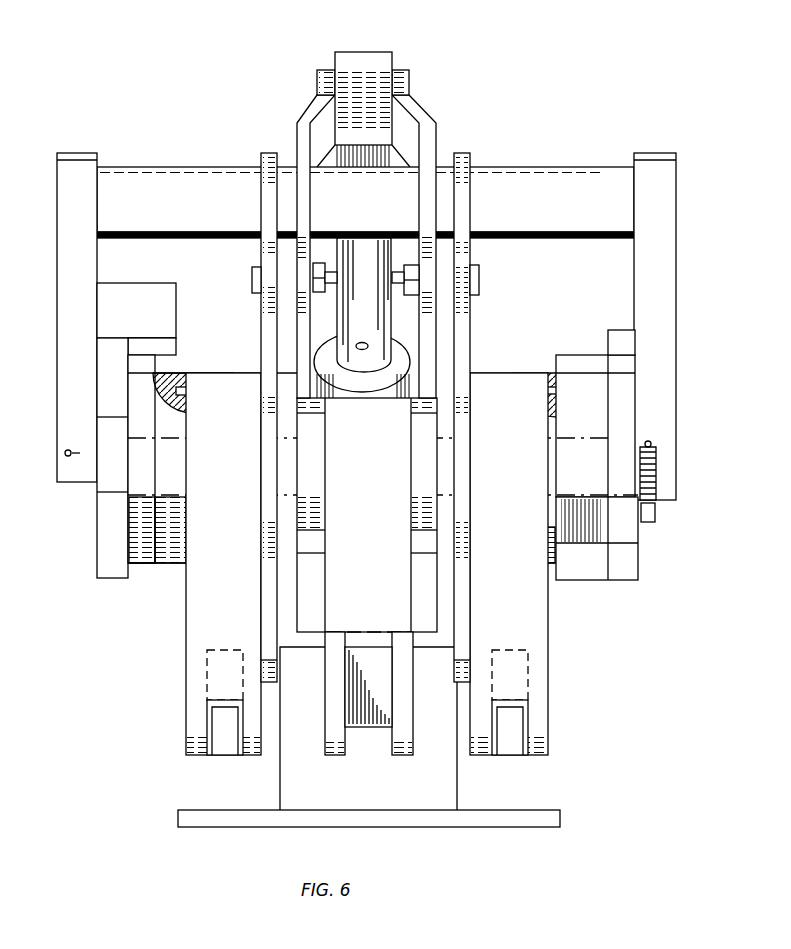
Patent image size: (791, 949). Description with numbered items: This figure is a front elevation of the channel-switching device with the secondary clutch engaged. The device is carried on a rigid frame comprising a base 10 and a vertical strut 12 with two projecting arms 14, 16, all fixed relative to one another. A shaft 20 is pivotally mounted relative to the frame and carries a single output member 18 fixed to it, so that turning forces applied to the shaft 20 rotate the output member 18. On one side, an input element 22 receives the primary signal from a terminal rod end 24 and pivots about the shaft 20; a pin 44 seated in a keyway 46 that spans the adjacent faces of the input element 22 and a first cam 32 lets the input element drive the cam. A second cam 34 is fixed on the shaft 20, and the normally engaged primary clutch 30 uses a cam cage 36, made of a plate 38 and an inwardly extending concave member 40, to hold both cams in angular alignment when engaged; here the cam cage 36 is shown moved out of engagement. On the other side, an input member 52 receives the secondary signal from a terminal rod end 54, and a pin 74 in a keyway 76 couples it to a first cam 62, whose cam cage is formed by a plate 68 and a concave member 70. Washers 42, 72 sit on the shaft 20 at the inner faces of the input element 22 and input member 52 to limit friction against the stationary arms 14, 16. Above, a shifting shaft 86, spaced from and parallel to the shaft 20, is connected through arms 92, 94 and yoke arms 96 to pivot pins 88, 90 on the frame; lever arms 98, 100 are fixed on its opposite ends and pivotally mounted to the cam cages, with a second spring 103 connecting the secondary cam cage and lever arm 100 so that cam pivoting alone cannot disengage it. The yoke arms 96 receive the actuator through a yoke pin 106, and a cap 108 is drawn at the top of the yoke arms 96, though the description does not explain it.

The base 10 is at (528, 828).
The vertical strut 12 is at (457, 786).
The projecting arm 14 is at (280, 350).
The projecting arm 16 is at (454, 328).
The output member 18 is at (332, 664).
The shaft 20 is at (592, 440).
The input element 22 is at (236, 622).
The terminal rod end 24 is at (210, 725).
The primary clutch 30 is at (118, 592).
The first cam 32 is at (170, 564).
The second cam 34 is at (143, 564).
The cam cage 36 is at (86, 541).
The plate 38 is at (98, 520).
The concave member 40 is at (143, 283).
The washer 42 is at (270, 576).
The pin 44 is at (203, 379).
The keyway 46 is at (185, 384).
The input member 52 is at (535, 632).
The terminal rod end 54 is at (520, 735).
The first cam 62 is at (552, 380).
The plate 68 is at (624, 581).
The concave member 70 is at (604, 581).
The washer 72 is at (470, 570).
The pin 74 is at (546, 380).
The keyway 76 is at (491, 384).
The shifting shaft 86 is at (180, 186).
The pivot pin 88 is at (256, 281).
The pivot pin 90 is at (480, 282).
The arm 92 is at (268, 152).
The arm 94 is at (462, 152).
The yoke arms 96 is at (319, 86).
The lever arm 98 is at (63, 299).
The lever arm 100 is at (677, 284).
The second spring 103 is at (659, 511).
The yoke pin 106 is at (410, 364).
The cap 108 is at (372, 52).